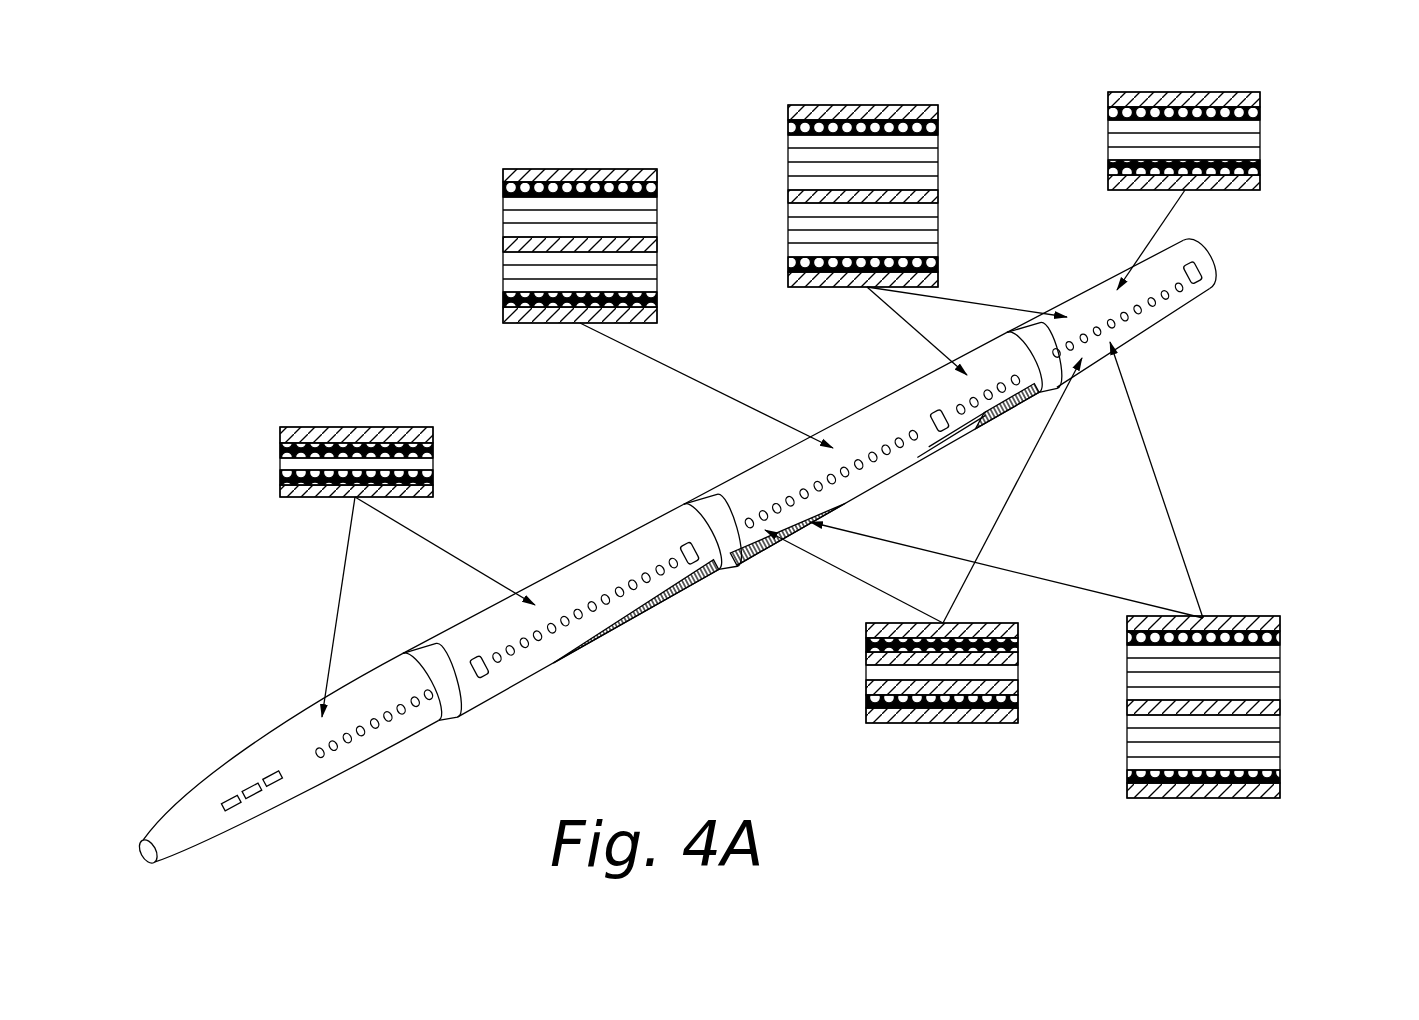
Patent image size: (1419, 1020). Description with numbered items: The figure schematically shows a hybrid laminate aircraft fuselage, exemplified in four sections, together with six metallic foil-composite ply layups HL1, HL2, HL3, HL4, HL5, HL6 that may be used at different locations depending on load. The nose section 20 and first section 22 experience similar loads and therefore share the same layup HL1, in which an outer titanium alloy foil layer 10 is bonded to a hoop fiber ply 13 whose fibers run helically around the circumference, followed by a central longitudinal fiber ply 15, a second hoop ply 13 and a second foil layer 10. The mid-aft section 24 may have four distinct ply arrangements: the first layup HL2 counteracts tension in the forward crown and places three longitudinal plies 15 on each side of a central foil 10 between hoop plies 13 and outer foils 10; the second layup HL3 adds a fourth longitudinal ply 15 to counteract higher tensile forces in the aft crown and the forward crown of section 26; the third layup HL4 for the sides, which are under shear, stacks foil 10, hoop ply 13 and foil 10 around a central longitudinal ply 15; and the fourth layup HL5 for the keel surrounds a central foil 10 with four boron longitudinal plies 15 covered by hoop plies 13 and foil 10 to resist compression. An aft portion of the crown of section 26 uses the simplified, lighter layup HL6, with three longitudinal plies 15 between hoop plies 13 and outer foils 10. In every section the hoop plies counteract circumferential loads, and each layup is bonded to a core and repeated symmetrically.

The titanium foil layer 10 is at (433, 435).
The hoop fiber ply 13 is at (433, 450).
The longitudinal fiber ply 15 is at (433, 464).
The nose section 20 is at (252, 820).
The first section 22 is at (477, 692).
The mid-aft section 24 is at (730, 483).
The fuselage section 26 is at (1180, 305).
The layup HL1 is at (257, 455).
The first layup HL2 is at (407, 240).
The second layup HL3 is at (858, 88).
The third layup HL4 is at (938, 738).
The fourth layup HL5 is at (1220, 820).
The layup HL6 is at (1282, 132).